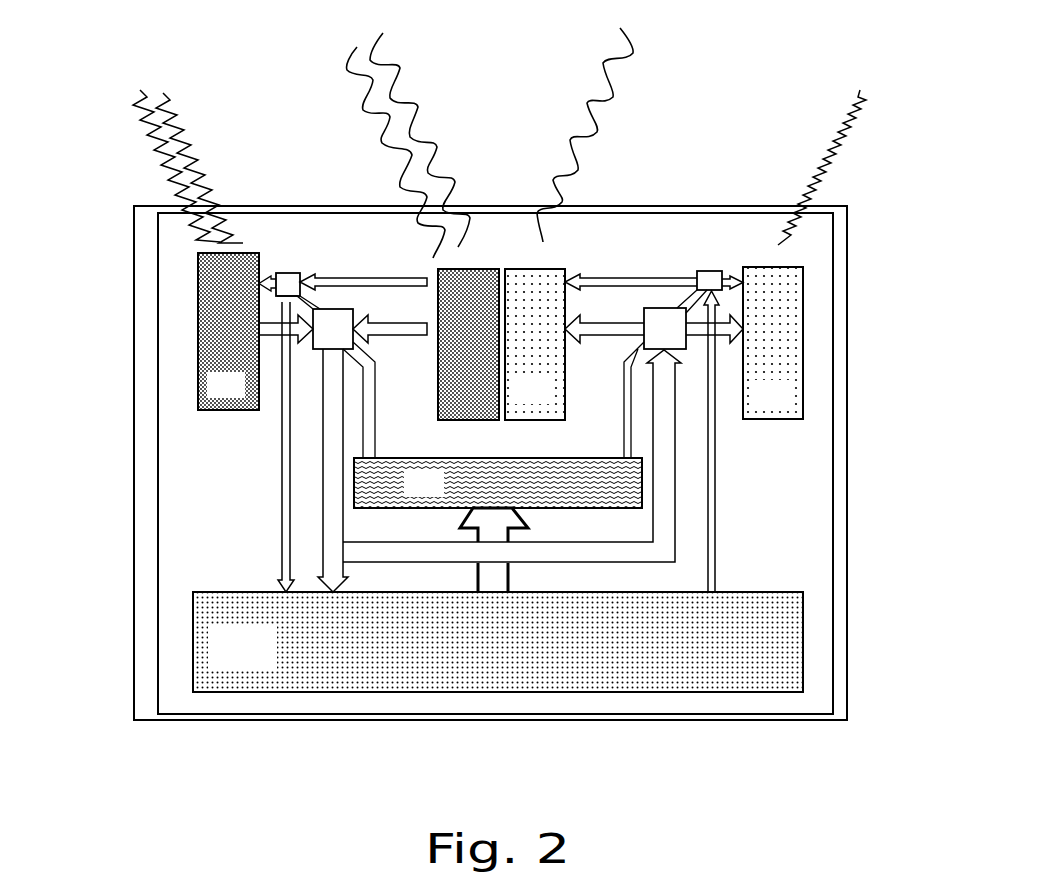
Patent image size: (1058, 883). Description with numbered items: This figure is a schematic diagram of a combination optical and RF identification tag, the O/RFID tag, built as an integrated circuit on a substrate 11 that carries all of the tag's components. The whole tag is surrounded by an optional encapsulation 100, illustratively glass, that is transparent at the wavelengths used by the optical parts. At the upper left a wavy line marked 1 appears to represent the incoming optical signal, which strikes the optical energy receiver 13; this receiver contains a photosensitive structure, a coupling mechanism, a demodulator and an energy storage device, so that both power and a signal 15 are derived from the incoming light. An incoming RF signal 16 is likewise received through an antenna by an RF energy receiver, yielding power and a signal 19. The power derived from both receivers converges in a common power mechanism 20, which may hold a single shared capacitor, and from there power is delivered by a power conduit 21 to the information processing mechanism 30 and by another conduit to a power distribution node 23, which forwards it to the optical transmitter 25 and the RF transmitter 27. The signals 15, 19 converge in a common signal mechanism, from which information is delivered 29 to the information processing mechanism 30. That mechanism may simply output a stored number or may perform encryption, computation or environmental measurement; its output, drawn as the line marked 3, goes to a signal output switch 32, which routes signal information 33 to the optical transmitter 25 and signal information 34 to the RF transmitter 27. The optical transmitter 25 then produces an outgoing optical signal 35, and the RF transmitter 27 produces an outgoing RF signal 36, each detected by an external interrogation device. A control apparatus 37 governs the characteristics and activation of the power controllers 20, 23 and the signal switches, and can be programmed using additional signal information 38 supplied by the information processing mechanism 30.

The first incident radiation 1 is at (136, 110).
The return line 3 is at (726, 553).
The substrate 11 is at (490, 726).
The optical energy receiver 13 is at (228, 331).
The signal 15 is at (272, 267).
The incoming RF signal 16 is at (404, 60).
The signal 19 is at (375, 267).
The common power mechanism 20 is at (343, 383).
The power conduit 21 is at (333, 470).
The power distribution node 23 is at (543, 426).
The optical transmitter 25 is at (773, 343).
The RF transmitter 27 is at (535, 344).
The information delivery 29 is at (272, 560).
The information processing mechanism 30 is at (498, 642).
The signal output switch 32 is at (709, 280).
The signal 33 is at (735, 267).
The signal 34 is at (613, 267).
The outgoing optical signal 35 is at (876, 110).
The outgoing RF signal 36 is at (592, 60).
The control apparatus 37 is at (498, 483).
The additional signal information 38 is at (494, 550).
The encapsulation 100 is at (366, 721).